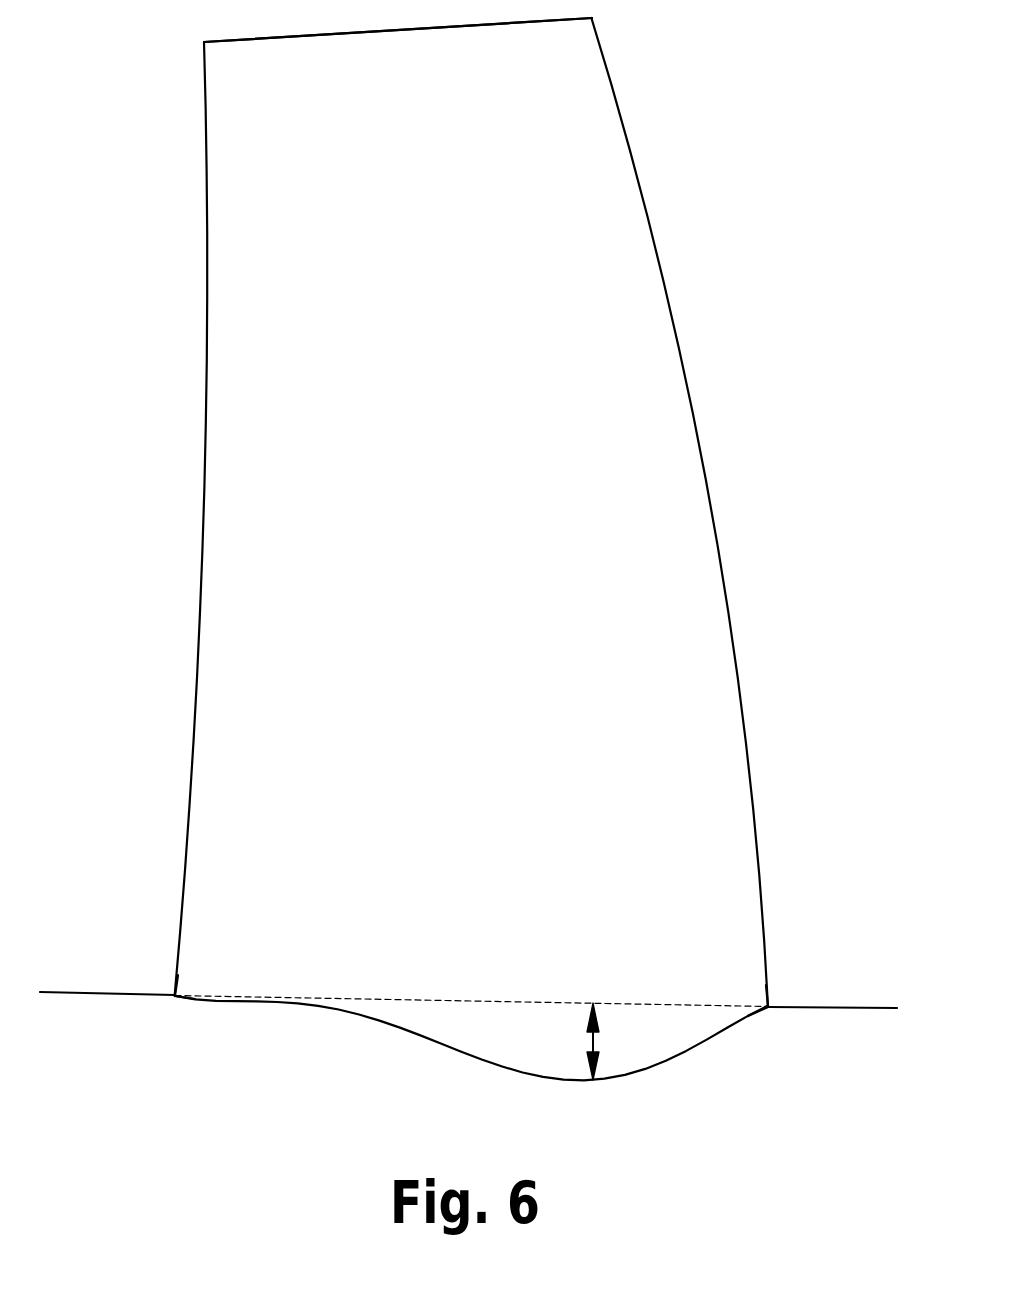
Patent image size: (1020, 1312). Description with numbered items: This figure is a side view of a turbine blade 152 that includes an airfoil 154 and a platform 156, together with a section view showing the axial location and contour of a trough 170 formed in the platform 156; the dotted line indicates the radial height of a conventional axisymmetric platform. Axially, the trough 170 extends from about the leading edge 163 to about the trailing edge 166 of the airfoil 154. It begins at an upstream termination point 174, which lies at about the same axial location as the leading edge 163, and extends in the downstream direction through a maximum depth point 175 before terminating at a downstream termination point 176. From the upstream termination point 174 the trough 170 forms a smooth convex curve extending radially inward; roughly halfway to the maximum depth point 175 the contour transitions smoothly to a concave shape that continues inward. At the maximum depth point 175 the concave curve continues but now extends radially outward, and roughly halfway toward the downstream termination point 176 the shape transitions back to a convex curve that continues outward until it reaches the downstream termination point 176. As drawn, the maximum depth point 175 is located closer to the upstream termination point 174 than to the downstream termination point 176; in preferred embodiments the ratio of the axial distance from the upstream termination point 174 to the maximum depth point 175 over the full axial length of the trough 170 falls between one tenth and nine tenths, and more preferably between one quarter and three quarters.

The turbine blade 152 is at (748, 162).
The airfoil 154 is at (490, 444).
The platform 156 is at (139, 1050).
The leading edge 163 is at (718, 540).
The trailing edge 166 is at (207, 345).
The trough 170 is at (523, 1039).
The upstream termination point 174 is at (768, 1008).
The maximum depth point 175 is at (595, 1082).
The downstream termination point 176 is at (175, 996).